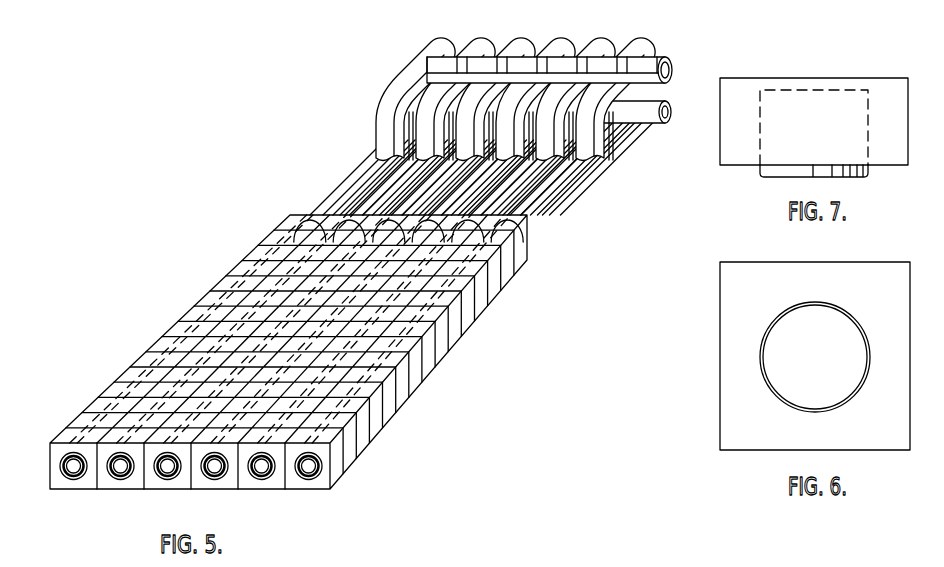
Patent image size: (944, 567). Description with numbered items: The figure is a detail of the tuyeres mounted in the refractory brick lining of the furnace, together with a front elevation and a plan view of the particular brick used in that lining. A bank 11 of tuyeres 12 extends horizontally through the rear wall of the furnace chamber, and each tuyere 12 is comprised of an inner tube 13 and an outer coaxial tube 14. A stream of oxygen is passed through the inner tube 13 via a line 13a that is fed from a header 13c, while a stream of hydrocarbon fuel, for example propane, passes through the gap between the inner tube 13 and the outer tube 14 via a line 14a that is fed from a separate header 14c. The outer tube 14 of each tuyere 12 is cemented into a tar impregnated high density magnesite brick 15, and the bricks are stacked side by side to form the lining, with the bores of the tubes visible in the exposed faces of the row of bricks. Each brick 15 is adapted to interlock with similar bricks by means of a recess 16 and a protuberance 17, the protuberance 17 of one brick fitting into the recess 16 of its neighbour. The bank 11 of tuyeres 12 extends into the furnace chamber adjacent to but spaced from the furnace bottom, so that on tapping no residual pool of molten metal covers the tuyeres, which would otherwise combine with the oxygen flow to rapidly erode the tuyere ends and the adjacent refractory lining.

In FIG. 5, the bank of tuyeres 11 is at (216, 486).
In FIG. 5, the tuyere 12 is at (172, 486).
In FIG. 5, the inner tube 13 is at (118, 489).
In FIG. 5, the outer coaxial tube 14 is at (66, 487).
In FIG. 5, the line 13a is at (368, 170).
In FIG. 5, the line 14a is at (422, 60).
In FIG. 5, the header 13c is at (637, 123).
In FIG. 5, the header 14c is at (660, 59).
In FIG. 5, the magnesite brick 15 is at (333, 476).
In FIG. 6, the magnesite brick 15 is at (902, 433).
In FIG. 7, the recess 16 is at (830, 86).
In FIG. 7, the protuberance 17 is at (857, 177).
In FIG. 6, the protuberance 17 is at (870, 360).